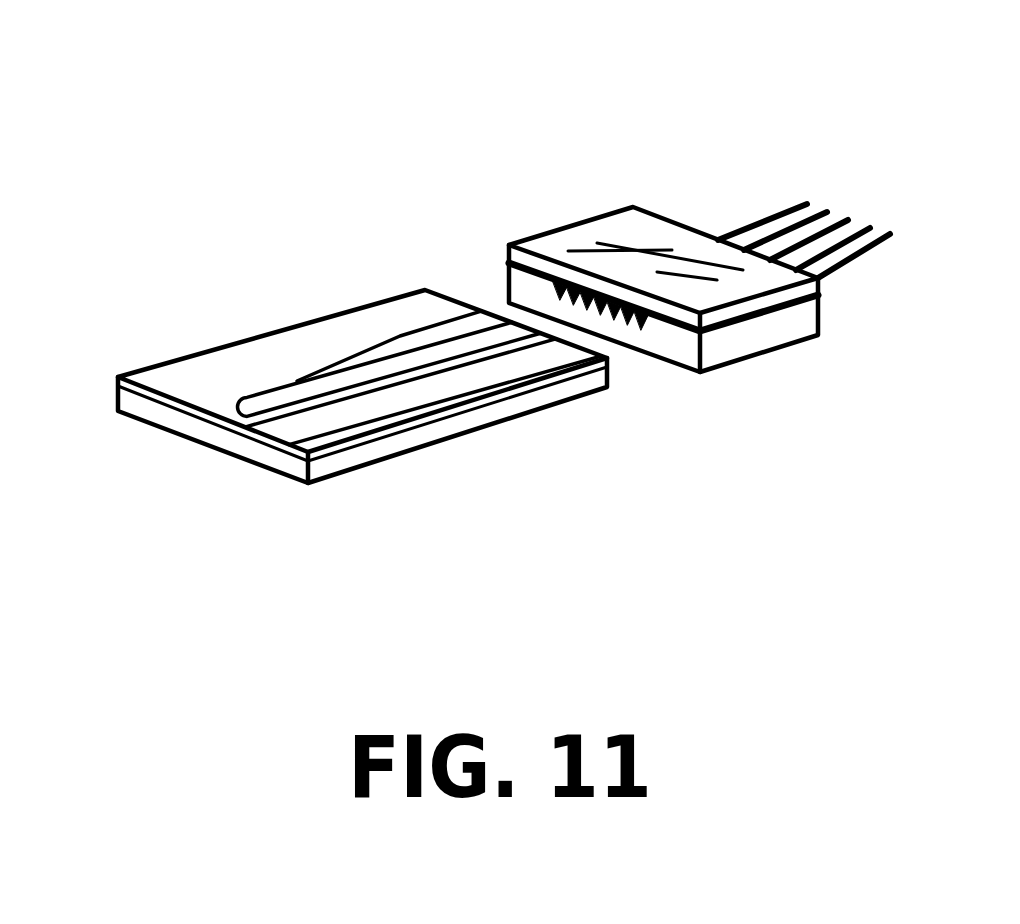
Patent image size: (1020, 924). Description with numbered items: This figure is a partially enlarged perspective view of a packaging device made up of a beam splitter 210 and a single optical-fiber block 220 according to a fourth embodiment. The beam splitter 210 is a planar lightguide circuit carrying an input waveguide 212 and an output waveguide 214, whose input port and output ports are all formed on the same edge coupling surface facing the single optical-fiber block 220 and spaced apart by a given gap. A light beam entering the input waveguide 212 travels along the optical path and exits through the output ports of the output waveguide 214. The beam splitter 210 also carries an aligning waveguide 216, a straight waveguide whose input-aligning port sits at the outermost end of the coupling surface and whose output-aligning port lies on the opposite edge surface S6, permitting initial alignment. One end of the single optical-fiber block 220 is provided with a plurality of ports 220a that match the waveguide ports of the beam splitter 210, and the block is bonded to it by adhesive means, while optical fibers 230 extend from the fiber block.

The beam splitter 210 is at (401, 324).
The input waveguide 212 is at (417, 368).
The output waveguide 214 is at (393, 332).
The aligning waveguide 216 is at (570, 403).
The other edge surface S6 is at (250, 447).
The single optical-fiber block 220 is at (663, 235).
The ports 220a is at (635, 340).
The optical fibers 230 is at (745, 225).